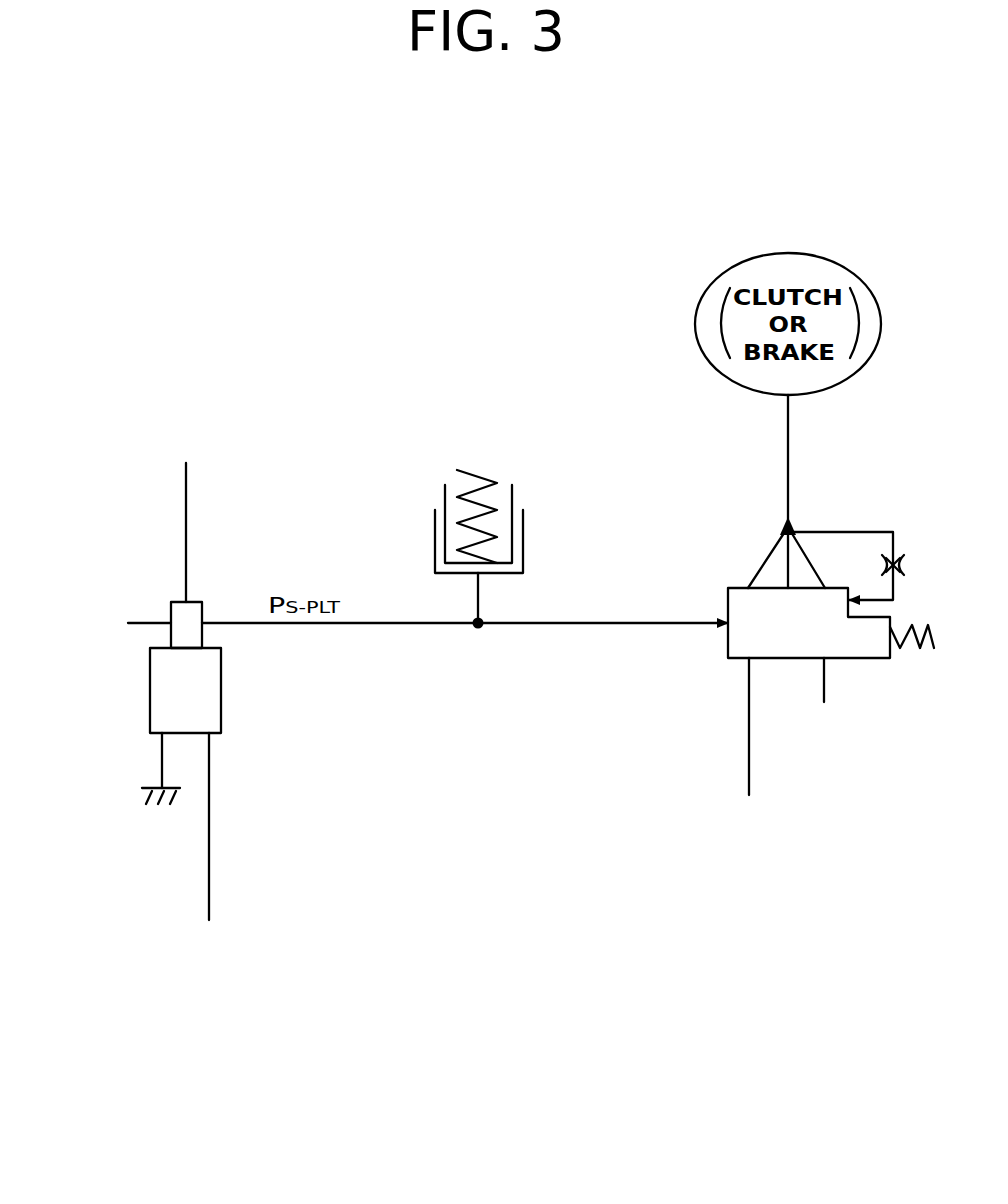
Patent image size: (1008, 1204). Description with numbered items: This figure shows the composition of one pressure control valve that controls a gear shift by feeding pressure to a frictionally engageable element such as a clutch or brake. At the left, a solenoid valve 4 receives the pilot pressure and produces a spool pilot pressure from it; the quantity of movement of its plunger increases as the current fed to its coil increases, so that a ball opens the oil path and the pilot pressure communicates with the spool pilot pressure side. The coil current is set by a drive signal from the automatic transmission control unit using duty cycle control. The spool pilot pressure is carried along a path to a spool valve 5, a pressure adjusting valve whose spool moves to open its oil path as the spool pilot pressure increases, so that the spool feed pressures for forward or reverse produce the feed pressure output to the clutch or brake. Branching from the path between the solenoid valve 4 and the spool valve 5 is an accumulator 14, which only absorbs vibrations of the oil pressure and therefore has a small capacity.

The solenoid valve 4 is at (107, 702).
The spool valve 5 is at (700, 660).
The accumulator 14 is at (417, 470).